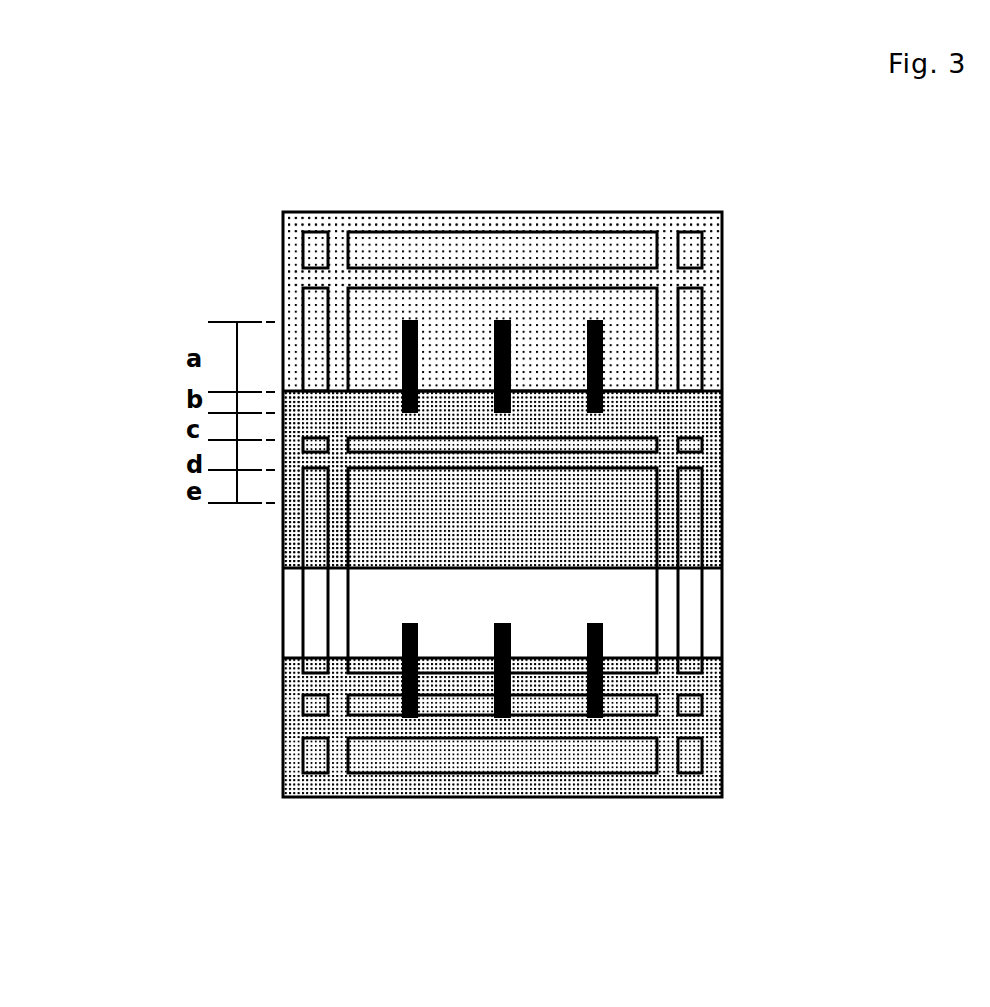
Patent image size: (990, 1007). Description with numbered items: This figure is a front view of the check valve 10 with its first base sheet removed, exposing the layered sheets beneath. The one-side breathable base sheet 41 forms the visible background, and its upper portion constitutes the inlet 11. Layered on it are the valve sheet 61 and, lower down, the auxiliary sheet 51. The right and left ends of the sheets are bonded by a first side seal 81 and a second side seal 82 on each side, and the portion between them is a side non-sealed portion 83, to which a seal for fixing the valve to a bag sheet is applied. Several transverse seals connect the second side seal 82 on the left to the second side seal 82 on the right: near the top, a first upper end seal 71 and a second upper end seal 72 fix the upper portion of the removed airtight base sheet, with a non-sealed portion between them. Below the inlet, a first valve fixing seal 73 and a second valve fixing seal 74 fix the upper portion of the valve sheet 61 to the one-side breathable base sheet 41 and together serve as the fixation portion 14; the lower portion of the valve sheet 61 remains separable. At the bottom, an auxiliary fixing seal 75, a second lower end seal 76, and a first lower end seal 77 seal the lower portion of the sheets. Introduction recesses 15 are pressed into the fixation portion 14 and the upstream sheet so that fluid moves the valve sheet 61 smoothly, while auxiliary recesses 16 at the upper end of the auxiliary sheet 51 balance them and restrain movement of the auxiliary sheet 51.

The check valve 10 is at (722, 210).
The inlet 11 is at (363, 307).
The fixation portion 14 is at (916, 393).
The introduction recesses 15 is at (410, 320).
The auxiliary recesses 16 is at (400, 662).
The one-side breathable base sheet 41 is at (367, 355).
The auxiliary sheet 51 is at (347, 725).
The valve sheet 61 is at (405, 560).
The first upper end seal 71 is at (580, 218).
The second upper end seal 72 is at (623, 275).
The first valve fixing seal 73 is at (635, 416).
The second valve fixing seal 74 is at (632, 460).
The auxiliary fixing seal 75 is at (452, 682).
The second lower end seal 76 is at (630, 728).
The first lower end seal 77 is at (572, 790).
The first side seal 81 is at (330, 525).
The second side seal 82 is at (340, 540).
The side non-sealed portion 83 is at (378, 250).